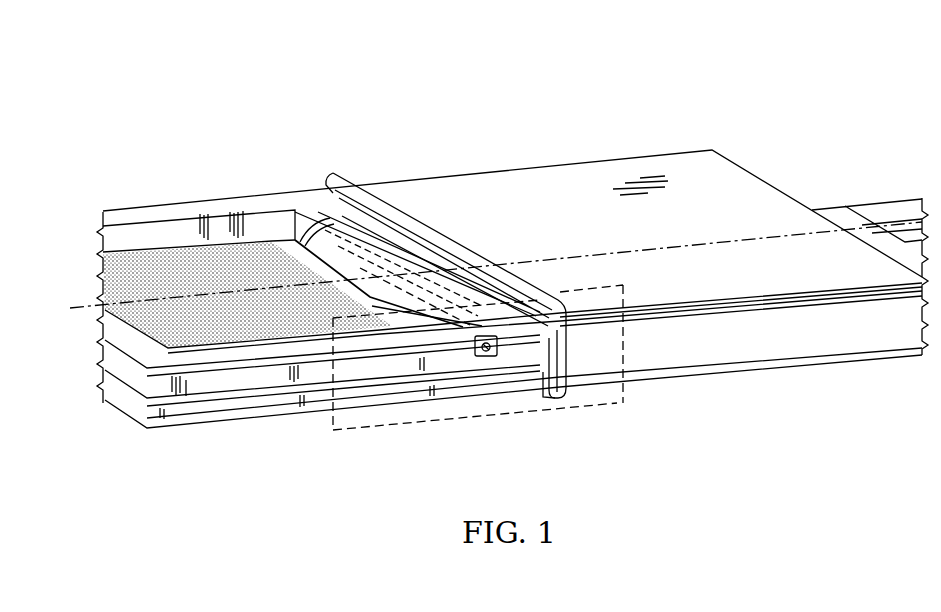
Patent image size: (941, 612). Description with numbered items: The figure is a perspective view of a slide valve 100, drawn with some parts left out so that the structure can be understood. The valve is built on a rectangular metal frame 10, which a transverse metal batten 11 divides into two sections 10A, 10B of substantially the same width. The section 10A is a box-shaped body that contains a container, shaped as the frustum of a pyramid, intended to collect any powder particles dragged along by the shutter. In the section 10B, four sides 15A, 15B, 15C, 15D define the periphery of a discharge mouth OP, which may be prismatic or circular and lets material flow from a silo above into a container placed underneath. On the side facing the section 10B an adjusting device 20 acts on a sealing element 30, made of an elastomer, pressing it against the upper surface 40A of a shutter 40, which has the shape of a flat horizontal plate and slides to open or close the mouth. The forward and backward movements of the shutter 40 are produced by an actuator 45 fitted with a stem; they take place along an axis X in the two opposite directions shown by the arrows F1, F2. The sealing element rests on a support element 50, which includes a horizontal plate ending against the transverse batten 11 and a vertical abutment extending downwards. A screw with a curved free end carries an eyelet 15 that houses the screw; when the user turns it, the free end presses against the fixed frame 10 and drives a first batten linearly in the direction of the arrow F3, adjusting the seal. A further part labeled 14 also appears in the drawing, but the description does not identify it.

The slide valve 100 is at (490, 277).
The rectangular metal frame 10 is at (730, 350).
The section of the frame 10A is at (512, 181).
The section of the frame 10B is at (222, 196).
The transverse metal batten 11 is at (427, 268).
The housing surface 14 is at (575, 181).
The eyelet 15 is at (486, 356).
The side 15A is at (140, 237).
The side 15B is at (103, 338).
The side 15C is at (267, 327).
The side 15D is at (457, 287).
The adjusting device 20 is at (361, 232).
The sealing element 30 is at (322, 212).
The shutter 40 is at (489, 277).
The upper surface of the shutter 40A is at (267, 248).
The actuator 45 is at (866, 207).
The support element 50 is at (548, 330).
The axis X is at (731, 235).
The discharge mouth OP is at (190, 240).
The arrow F1 is at (224, 275).
The arrow F2 is at (260, 303).
The arrow F3 is at (530, 368).